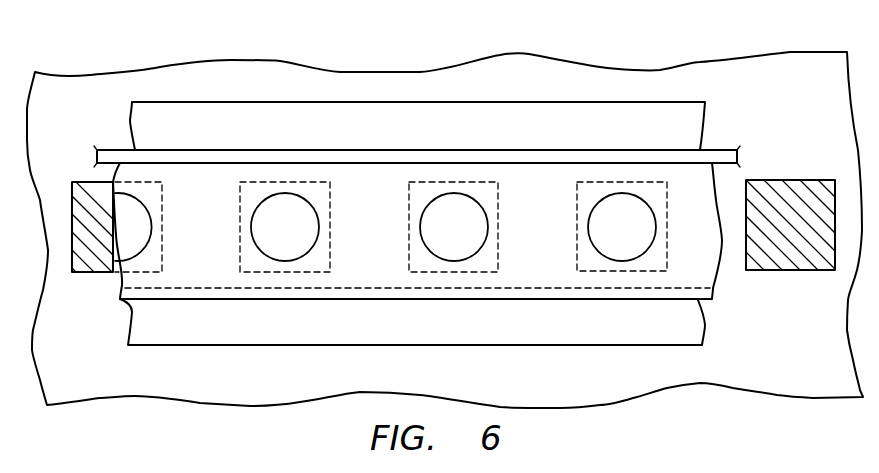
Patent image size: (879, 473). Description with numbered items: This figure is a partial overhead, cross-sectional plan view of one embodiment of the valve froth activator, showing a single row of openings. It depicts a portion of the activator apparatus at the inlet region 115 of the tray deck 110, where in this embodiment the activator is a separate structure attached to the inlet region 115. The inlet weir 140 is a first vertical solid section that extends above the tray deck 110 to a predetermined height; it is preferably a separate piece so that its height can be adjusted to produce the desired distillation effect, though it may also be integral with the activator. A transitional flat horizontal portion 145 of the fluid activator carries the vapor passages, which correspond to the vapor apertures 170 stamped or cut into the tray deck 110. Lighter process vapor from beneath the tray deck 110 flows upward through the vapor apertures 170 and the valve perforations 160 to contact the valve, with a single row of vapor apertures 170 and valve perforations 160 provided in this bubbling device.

The tray deck 110 is at (558, 385).
The inlet region 115 is at (614, 80).
The inlet weir 140 is at (506, 138).
The transitional flat horizontal portion 145 is at (387, 240).
The valve perforation 160 is at (585, 200).
The vapor aperture 170 is at (783, 185).